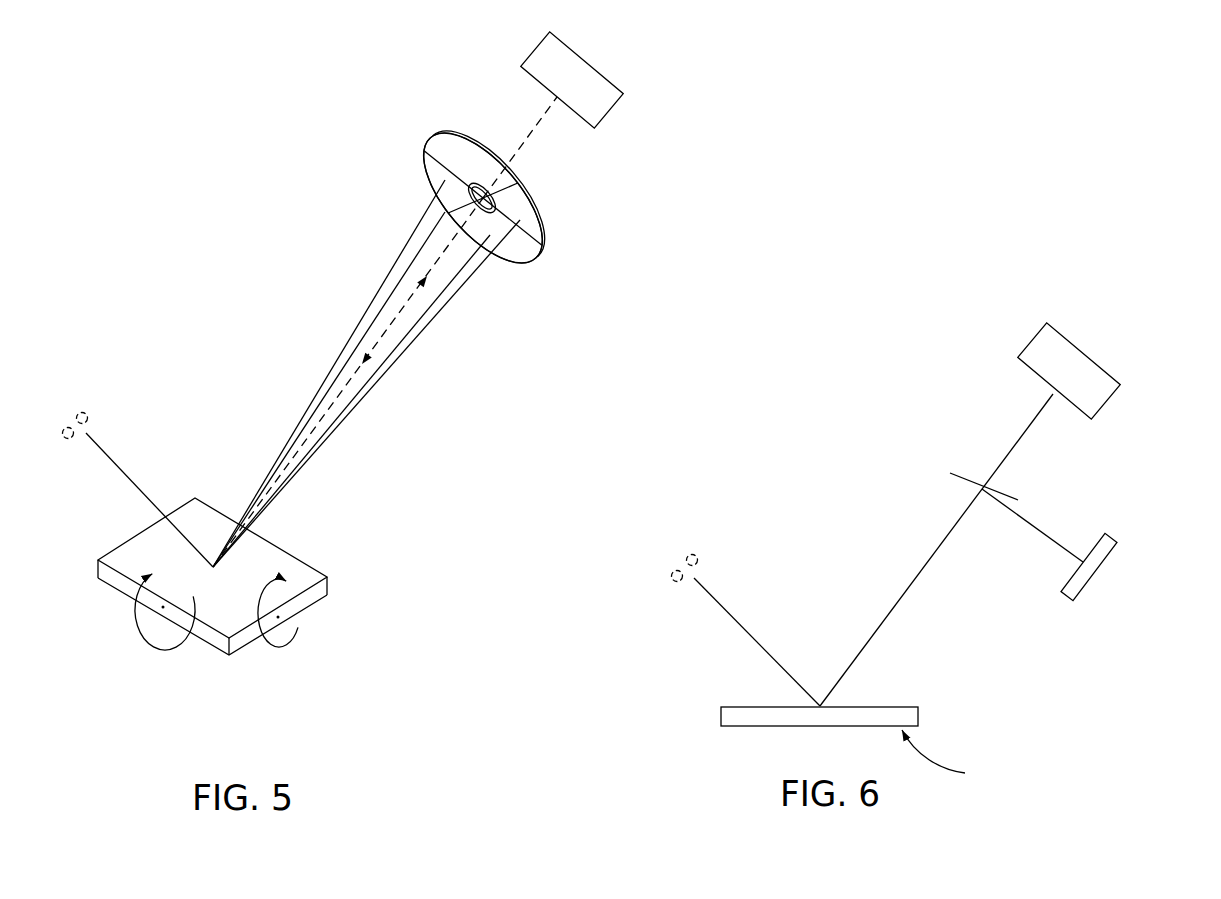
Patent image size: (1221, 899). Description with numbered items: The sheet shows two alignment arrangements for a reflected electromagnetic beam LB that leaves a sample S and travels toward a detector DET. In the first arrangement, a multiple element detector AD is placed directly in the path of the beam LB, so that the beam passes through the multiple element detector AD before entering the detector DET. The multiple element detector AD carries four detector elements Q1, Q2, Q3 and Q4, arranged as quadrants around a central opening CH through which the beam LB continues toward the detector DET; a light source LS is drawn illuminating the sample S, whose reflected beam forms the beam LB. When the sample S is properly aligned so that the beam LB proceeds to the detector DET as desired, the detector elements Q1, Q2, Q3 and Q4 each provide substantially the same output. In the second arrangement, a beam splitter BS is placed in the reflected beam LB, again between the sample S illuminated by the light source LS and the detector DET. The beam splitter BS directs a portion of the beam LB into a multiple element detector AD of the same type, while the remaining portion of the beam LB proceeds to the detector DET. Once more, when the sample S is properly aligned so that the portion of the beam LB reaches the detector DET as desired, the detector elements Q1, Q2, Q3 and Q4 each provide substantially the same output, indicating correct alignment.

In FIG. 5, the multiple element detector AD is at (437, 130).
In FIG. 6, the multiple element detector AD is at (1110, 562).
In FIG. 5, the detector element Q1 is at (426, 169).
In FIG. 5, the detector element Q2 is at (464, 146).
In FIG. 5, the detector element Q3 is at (544, 239).
In FIG. 5, the detector element Q4 is at (513, 262).
In FIG. 5, the central hole of aperture disk CH is at (495, 192).
In FIG. 5, the reflected electromagnetic beam LB is at (555, 115).
In FIG. 6, the reflected electromagnetic beam LB is at (922, 564).
In FIG. 5, the light source LS is at (126, 479).
In FIG. 6, the light source LS is at (734, 621).
In FIG. 5, the sample S is at (295, 621).
In FIG. 5, the detector DET is at (572, 80).
In FIG. 6, the detector DET is at (1069, 371).
In FIG. 6, the beam splitter BS is at (1018, 490).